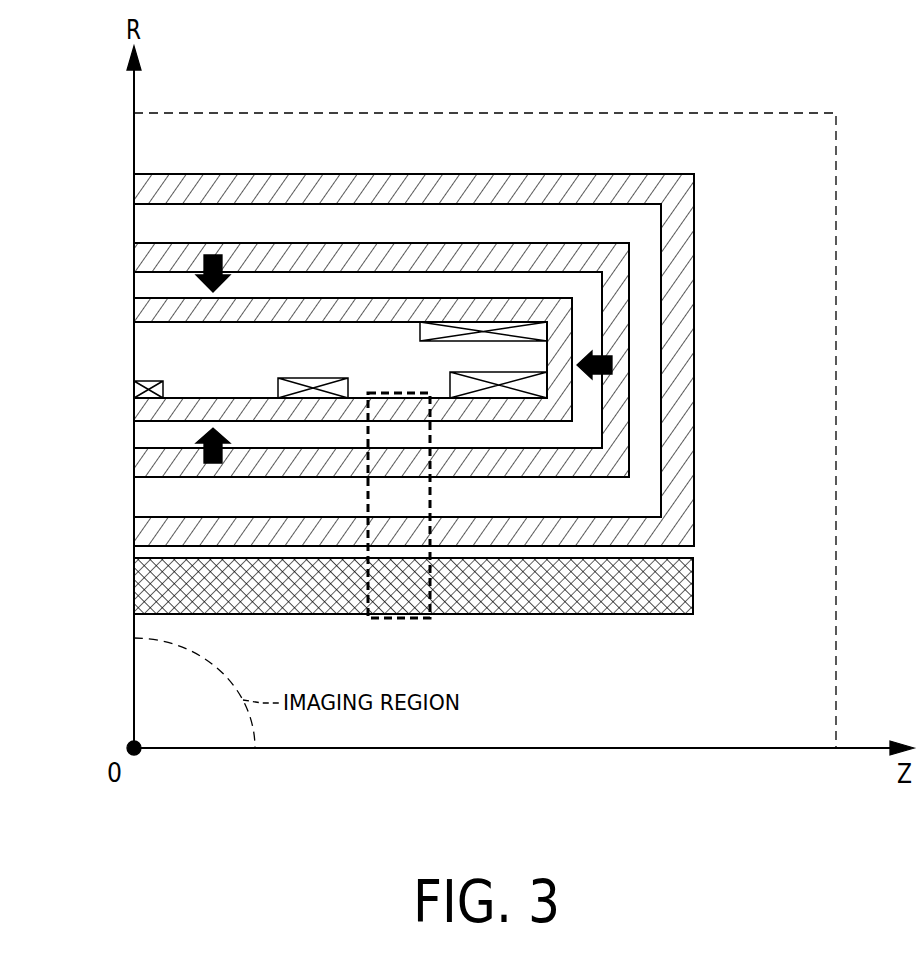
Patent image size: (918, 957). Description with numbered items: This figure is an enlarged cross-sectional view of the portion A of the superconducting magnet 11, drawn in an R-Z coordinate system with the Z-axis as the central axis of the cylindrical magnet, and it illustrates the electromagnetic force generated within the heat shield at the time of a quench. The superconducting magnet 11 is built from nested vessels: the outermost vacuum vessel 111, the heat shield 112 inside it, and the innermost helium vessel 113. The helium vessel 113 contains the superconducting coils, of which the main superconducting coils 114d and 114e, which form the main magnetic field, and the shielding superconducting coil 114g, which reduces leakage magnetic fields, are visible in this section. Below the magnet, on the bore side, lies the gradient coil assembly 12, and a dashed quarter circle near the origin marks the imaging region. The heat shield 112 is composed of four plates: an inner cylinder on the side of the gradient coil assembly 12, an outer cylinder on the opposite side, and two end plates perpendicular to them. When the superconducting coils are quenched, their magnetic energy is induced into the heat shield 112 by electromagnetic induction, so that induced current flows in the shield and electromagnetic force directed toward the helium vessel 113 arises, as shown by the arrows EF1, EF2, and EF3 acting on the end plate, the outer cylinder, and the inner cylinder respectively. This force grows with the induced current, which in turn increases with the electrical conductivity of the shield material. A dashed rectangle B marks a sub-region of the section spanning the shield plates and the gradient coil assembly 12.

The superconducting magnet 11 is at (413, 332).
The vacuum vessel 111 is at (694, 215).
The heat shield 112 is at (346, 243).
The helium vessel 113 is at (572, 410).
The superconducting coil 114d is at (278, 388).
The superconducting coil 114e is at (450, 385).
The superconducting coil 114g is at (420, 330).
The gradient coil assembly 12 is at (694, 583).
The electromagnetic force EF1 is at (612, 365).
The electromagnetic force EF2 is at (213, 255).
The electromagnetic force EF3 is at (197, 445).
The portion A is at (776, 113).
The enlarged region B is at (400, 620).